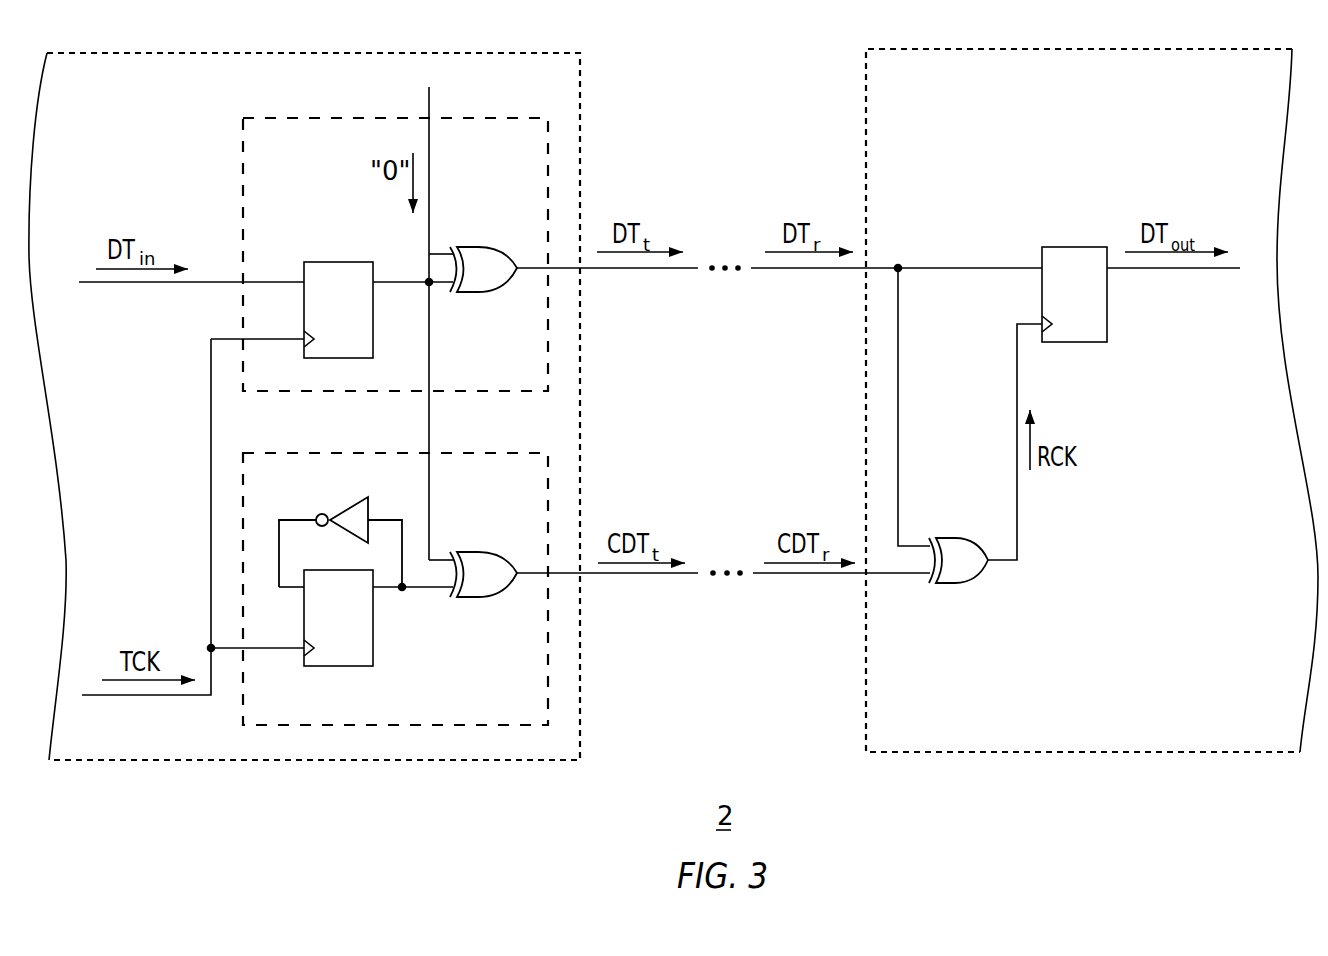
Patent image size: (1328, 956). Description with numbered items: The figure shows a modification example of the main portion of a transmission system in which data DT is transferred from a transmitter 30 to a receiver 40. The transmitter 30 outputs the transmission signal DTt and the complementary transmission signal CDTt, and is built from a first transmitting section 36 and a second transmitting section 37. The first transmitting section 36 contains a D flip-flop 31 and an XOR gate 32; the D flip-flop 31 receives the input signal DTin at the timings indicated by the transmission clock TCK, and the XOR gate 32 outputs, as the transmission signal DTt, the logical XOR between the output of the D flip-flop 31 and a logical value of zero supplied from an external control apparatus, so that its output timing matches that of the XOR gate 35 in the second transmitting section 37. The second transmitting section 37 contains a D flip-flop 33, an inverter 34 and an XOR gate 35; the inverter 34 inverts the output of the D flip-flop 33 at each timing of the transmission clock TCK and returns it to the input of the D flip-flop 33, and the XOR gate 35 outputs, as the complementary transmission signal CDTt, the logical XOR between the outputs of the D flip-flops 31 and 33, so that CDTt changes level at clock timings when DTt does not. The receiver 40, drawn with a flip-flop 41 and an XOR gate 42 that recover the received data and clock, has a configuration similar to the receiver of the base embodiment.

The transmitter 30 is at (322, 53).
The D flip-flop 31 is at (340, 262).
The XOR gate 32 is at (480, 247).
The D flip-flop 33 is at (340, 666).
The inverter 34 is at (345, 511).
The XOR gate 35 is at (480, 552).
The first transmitting section 36 is at (490, 118).
The second transmitting section 37 is at (490, 453).
The receiver 40 is at (1075, 49).
The data flip-flop 41 is at (1107, 318).
The exclusive OR gate 42 is at (980, 573).